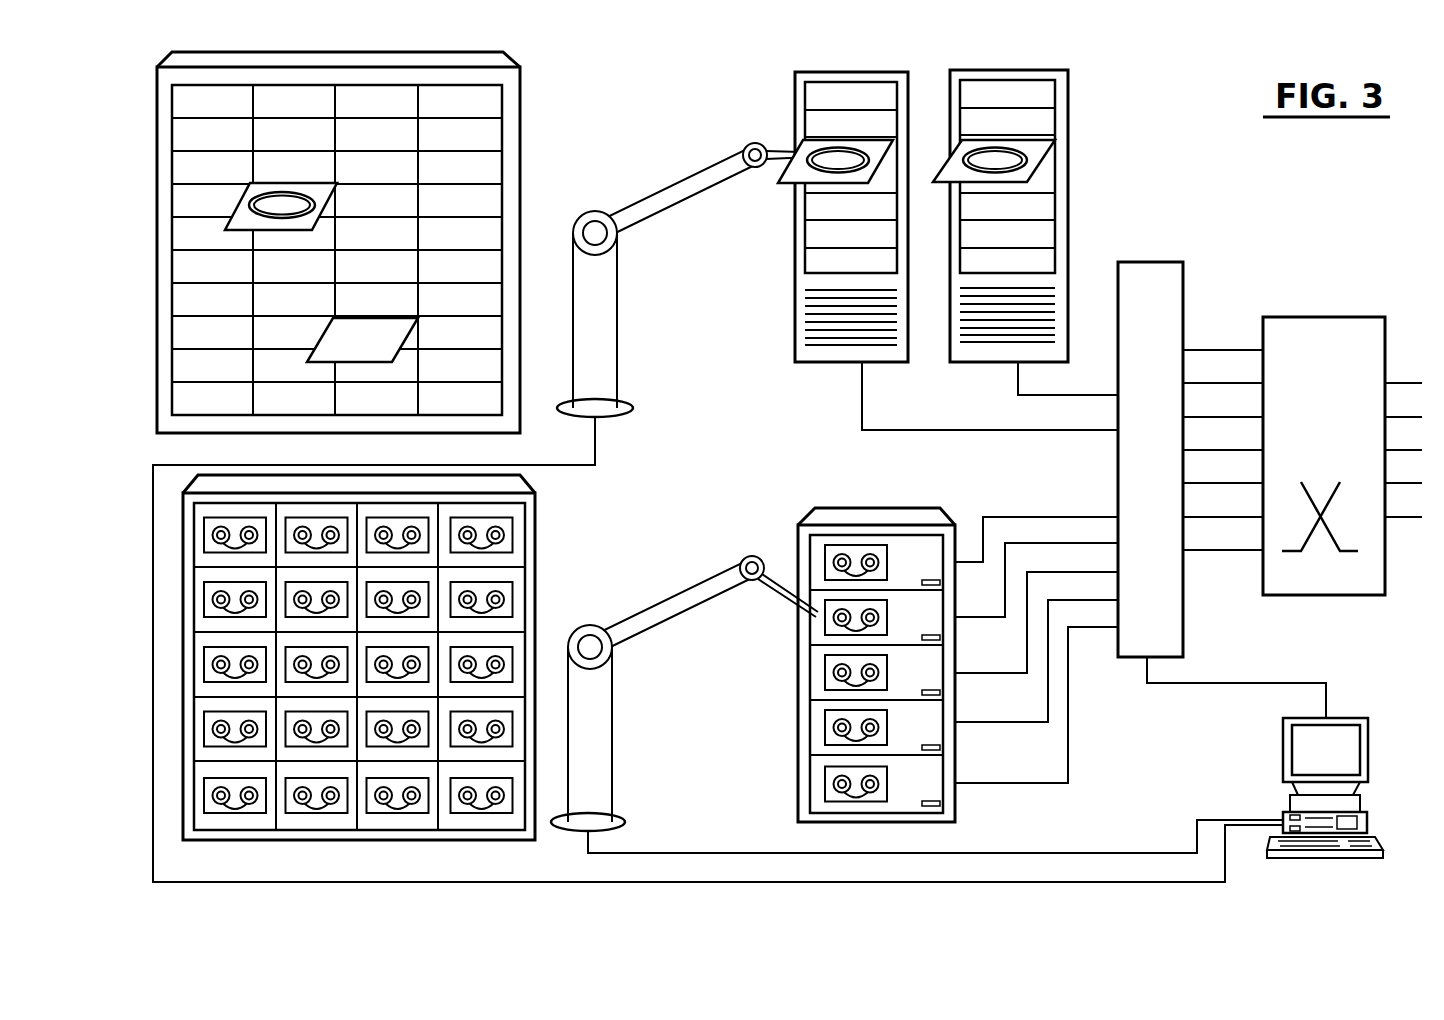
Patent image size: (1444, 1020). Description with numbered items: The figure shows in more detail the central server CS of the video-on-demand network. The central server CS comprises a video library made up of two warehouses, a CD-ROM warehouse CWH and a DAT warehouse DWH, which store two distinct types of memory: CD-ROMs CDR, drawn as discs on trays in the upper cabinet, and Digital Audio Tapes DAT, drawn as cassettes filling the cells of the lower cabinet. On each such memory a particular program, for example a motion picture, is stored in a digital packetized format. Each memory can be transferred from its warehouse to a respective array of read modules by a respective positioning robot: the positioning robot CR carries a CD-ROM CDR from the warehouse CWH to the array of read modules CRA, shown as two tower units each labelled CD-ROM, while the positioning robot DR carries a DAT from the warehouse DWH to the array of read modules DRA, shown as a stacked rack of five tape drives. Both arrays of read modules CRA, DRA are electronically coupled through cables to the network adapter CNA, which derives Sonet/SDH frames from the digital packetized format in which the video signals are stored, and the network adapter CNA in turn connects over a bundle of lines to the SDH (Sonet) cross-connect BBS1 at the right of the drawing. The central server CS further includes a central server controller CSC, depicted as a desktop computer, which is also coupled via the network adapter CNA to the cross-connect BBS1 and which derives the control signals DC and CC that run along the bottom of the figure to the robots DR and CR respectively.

The central server CS is at (746, 461).
The CD-ROM warehouse CWH is at (155, 252).
The CD-ROM CDR is at (257, 200).
The control signal CC is at (718, 650).
The positioning robot CR is at (618, 348).
The CD-ROM read module CD-ROM is at (923, 201).
The array of read modules CRA is at (978, 365).
The network adapter CNA is at (1181, 619).
The SDH (Sonet) cross-connect BBS1 is at (1318, 316).
The central server controller CSC is at (1355, 717).
The DAT warehouse DWH is at (263, 838).
The Digital Audio Tape DAT is at (387, 812).
The positioning robot DR is at (612, 758).
The array of read modules DRA is at (797, 795).
The control signal DC is at (935, 836).